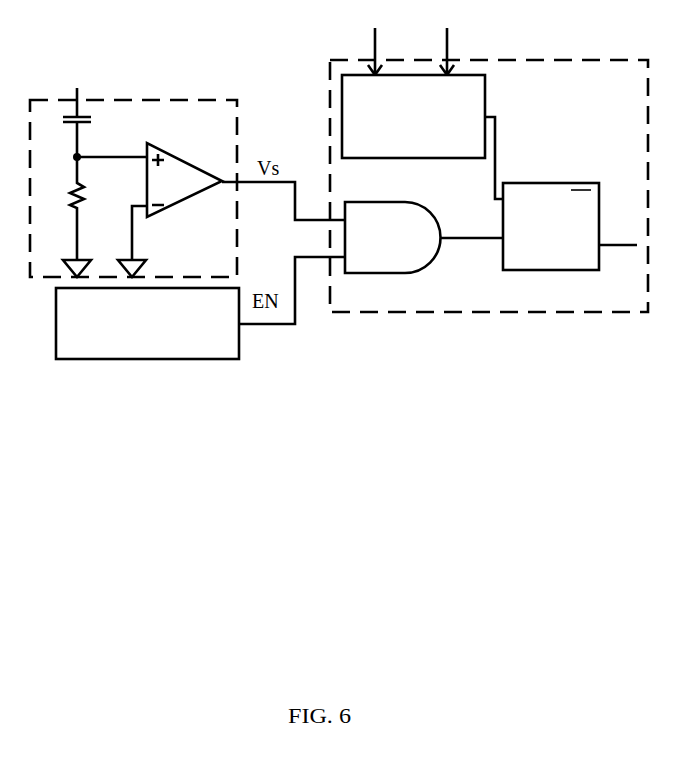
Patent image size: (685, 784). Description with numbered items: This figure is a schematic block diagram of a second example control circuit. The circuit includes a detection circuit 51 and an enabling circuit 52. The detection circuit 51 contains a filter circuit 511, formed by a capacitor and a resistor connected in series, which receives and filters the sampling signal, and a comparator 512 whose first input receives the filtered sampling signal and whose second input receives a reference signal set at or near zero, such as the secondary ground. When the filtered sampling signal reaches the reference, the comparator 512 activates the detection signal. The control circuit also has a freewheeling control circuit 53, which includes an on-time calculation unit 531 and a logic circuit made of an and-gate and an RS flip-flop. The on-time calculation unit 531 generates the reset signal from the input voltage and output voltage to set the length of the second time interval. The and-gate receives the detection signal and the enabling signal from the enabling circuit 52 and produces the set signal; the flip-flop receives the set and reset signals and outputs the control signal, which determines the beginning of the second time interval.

The detection circuit 51 is at (188, 100).
The filter circuit 511 is at (101, 140).
The comparator 512 is at (176, 152).
The enabling circuit 52 is at (160, 349).
The freewheeling control circuit 53 is at (348, 60).
The on-time calculation unit 531 is at (413, 82).